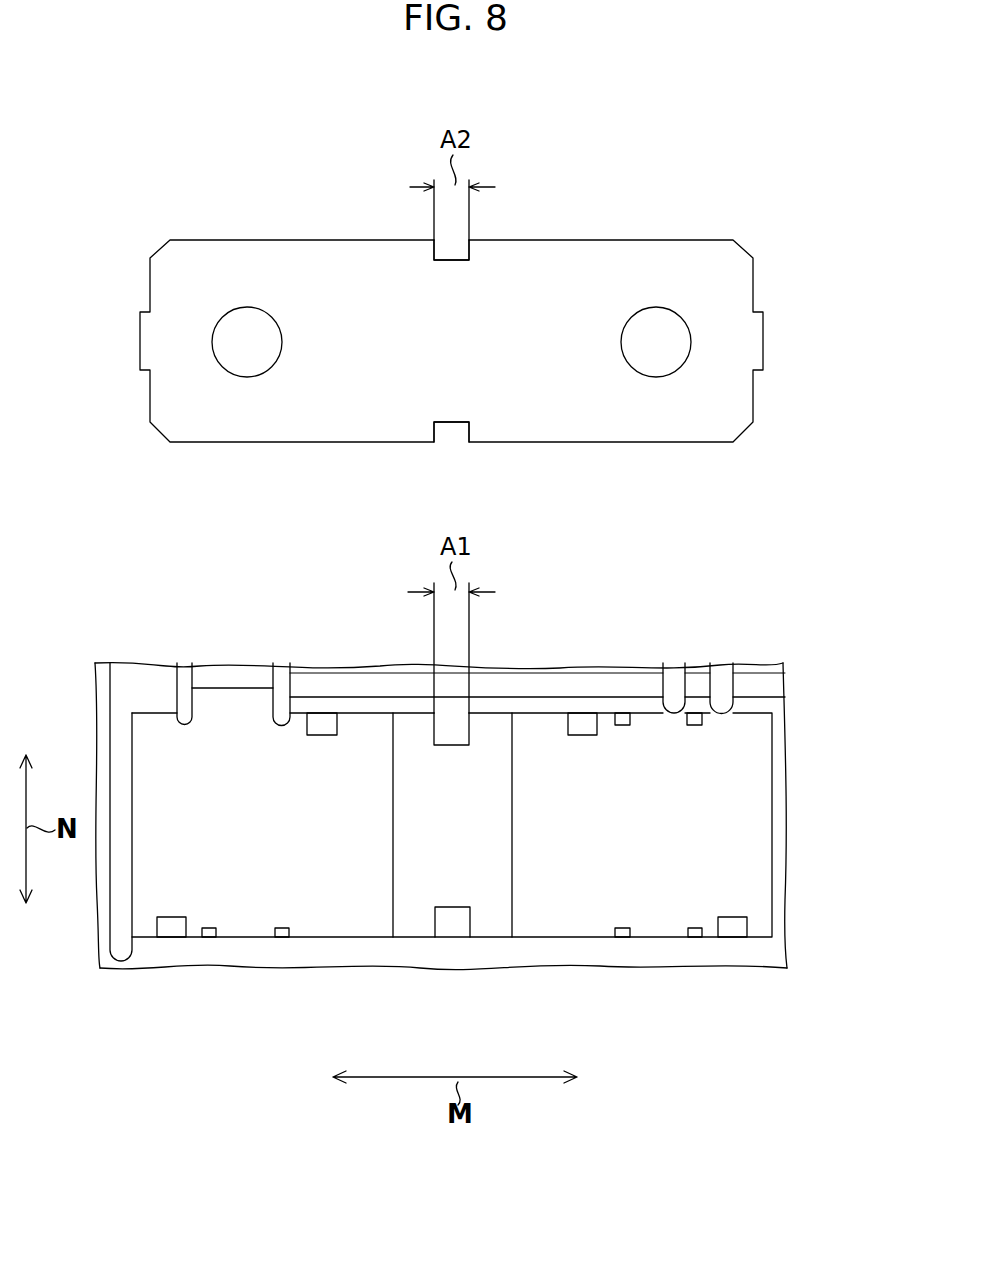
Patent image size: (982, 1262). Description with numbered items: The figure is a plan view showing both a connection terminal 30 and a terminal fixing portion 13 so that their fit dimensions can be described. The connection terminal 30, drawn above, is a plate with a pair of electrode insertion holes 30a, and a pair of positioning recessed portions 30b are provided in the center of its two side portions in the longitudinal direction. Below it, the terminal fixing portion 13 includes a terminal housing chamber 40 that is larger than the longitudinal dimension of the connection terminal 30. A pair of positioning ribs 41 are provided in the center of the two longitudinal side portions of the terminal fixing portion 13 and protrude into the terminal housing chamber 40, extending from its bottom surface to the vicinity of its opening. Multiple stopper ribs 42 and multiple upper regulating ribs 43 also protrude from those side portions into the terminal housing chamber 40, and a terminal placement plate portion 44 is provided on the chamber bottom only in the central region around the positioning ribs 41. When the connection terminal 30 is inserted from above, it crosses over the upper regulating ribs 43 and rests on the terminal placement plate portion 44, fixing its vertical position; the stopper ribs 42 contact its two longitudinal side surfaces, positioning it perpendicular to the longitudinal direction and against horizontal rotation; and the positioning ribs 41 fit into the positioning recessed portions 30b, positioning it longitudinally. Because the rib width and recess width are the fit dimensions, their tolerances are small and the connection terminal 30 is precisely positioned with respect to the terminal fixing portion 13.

The terminal fixing portion 13 is at (153, 683).
The connection terminal 30 is at (333, 290).
The electrode insertion hole 30a is at (214, 344).
The positioning recessed portion 30b is at (452, 258).
The terminal housing chamber 40 is at (764, 833).
The positioning rib 41 is at (452, 730).
The stopper rib 42 is at (282, 700).
The upper regulating rib 43 is at (322, 725).
The terminal placement plate portion 44 is at (478, 832).